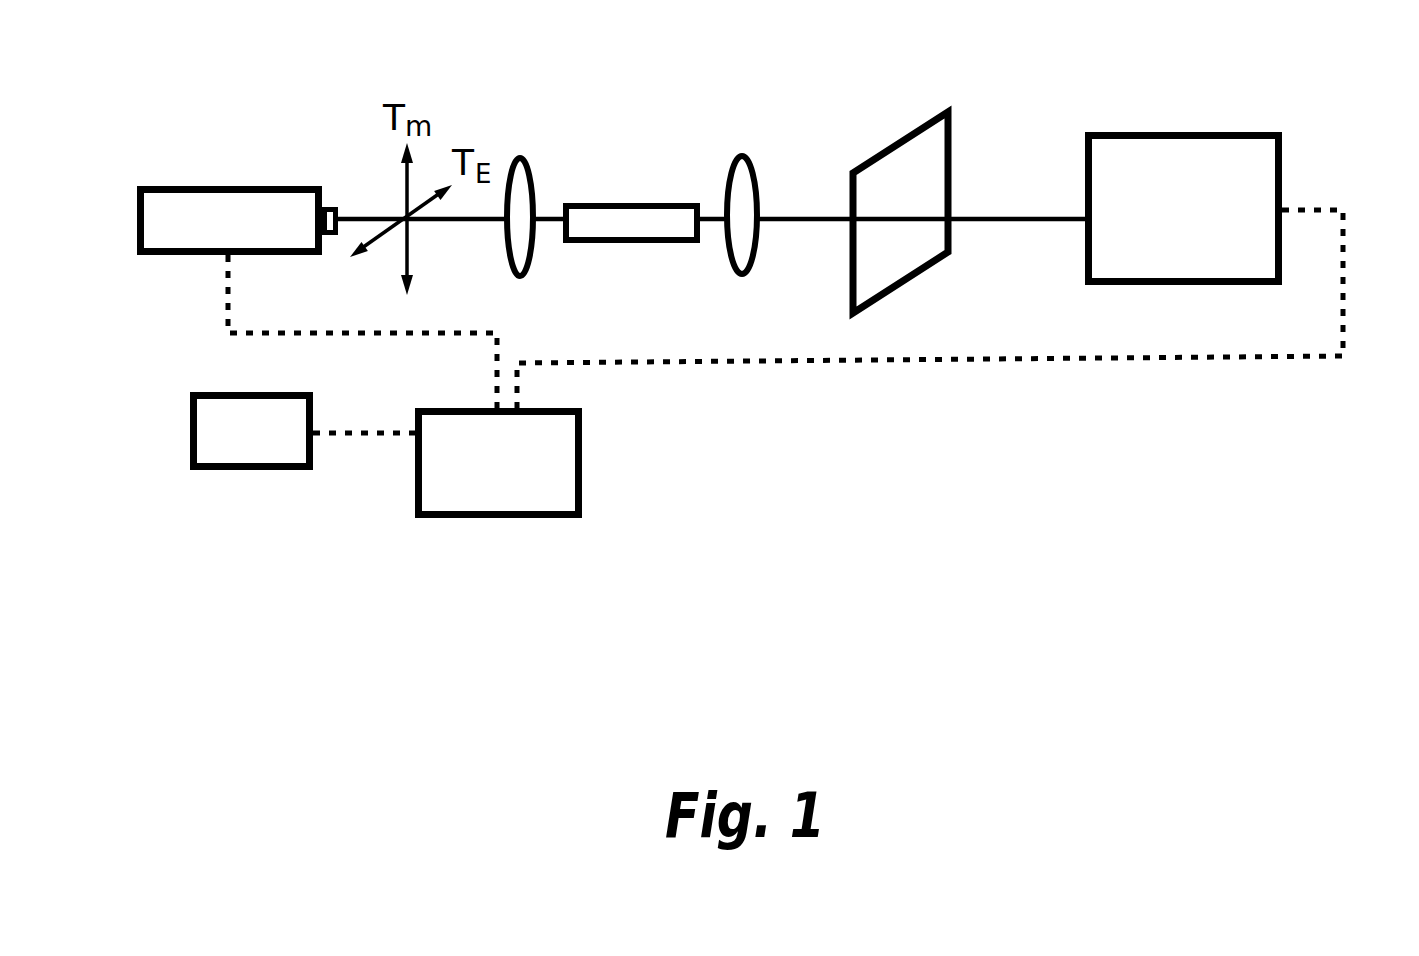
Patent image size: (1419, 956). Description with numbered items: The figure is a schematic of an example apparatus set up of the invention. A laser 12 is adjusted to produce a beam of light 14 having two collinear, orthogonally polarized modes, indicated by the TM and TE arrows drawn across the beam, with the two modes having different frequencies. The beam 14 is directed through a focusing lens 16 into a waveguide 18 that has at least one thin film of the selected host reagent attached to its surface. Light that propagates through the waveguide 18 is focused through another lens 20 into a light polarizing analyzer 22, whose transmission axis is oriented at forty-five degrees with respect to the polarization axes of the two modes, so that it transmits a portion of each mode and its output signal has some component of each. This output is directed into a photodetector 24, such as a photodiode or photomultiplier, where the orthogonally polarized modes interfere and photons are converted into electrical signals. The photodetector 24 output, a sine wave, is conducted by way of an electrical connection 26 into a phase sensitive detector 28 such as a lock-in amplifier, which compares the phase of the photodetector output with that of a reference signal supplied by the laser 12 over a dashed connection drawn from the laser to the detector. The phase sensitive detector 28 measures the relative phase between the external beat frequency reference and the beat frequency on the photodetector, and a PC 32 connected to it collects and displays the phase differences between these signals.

The laser 12 is at (137, 217).
The beam of light 14 is at (447, 224).
The focusing lens 16 is at (537, 197).
The waveguide 18 is at (643, 203).
The second lens 20 is at (740, 156).
The light polarizing analyzer 22 is at (917, 122).
The photodetector 24 is at (1197, 129).
The electrical connection 26 is at (1350, 248).
The phase sensitive detector 28 is at (522, 521).
The PC 32 is at (217, 391).